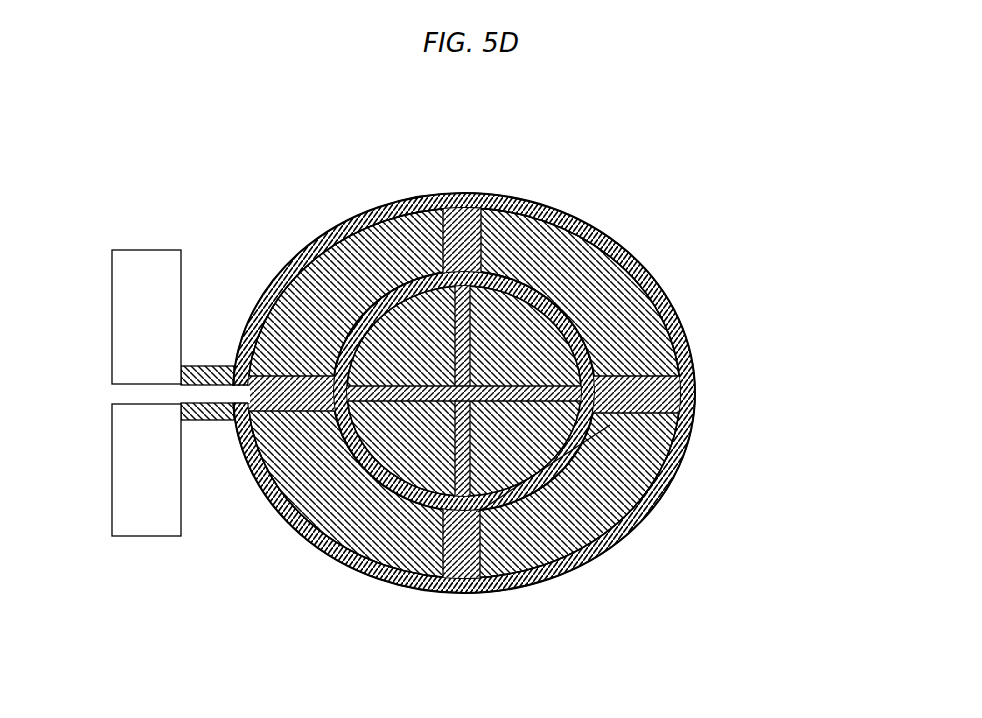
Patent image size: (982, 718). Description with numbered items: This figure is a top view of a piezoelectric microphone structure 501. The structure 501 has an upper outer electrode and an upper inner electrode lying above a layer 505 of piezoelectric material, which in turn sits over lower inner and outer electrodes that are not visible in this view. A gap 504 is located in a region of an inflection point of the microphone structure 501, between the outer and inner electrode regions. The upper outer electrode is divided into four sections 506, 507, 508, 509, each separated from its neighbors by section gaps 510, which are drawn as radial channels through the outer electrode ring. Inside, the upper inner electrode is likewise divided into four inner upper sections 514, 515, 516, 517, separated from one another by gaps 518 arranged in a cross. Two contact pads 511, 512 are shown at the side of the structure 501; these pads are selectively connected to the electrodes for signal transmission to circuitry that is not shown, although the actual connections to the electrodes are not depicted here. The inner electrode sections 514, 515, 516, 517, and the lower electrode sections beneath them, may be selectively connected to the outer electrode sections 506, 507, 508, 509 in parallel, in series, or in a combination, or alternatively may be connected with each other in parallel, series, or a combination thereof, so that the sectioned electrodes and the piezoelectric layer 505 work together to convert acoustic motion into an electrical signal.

The microphone structure 501 is at (770, 250).
The gap 504 is at (575, 434).
The layer of piezoelectric material 505 is at (286, 522).
The section of upper outer electrode 506 is at (335, 248).
The section of upper outer electrode 507 is at (577, 272).
The section of upper outer electrode 508 is at (595, 465).
The section of upper outer electrode 509 is at (400, 533).
The section gap 510 is at (460, 215).
The contact pad 511 is at (104, 460).
The contact pad 512 is at (104, 305).
The inner upper section 514 is at (405, 318).
The inner upper section 515 is at (548, 356).
The inner upper section 516 is at (550, 467).
The inner upper section 517 is at (377, 422).
The gap 518 is at (335, 328).